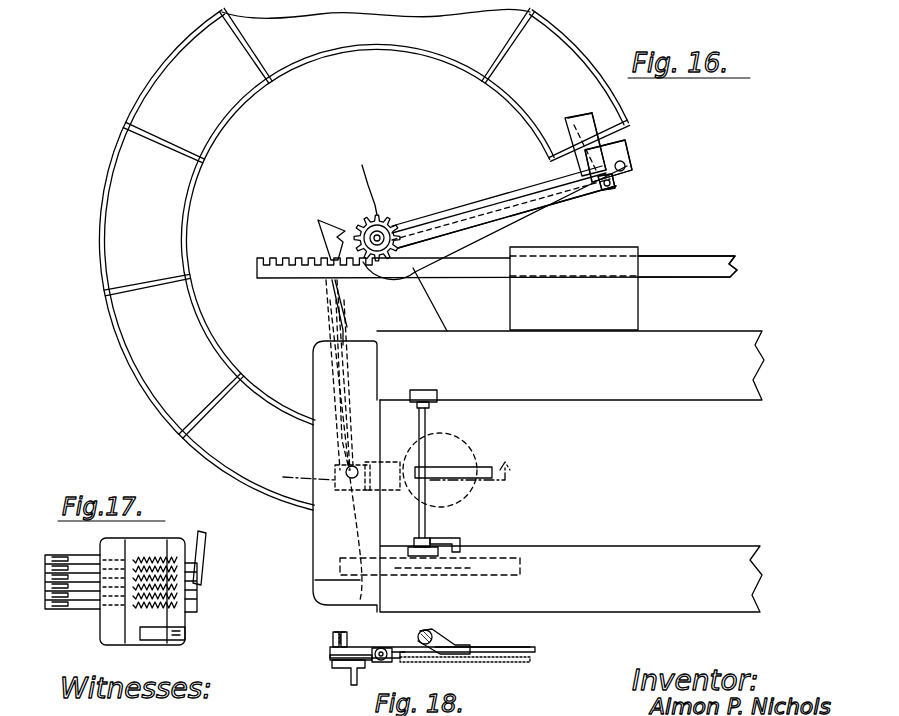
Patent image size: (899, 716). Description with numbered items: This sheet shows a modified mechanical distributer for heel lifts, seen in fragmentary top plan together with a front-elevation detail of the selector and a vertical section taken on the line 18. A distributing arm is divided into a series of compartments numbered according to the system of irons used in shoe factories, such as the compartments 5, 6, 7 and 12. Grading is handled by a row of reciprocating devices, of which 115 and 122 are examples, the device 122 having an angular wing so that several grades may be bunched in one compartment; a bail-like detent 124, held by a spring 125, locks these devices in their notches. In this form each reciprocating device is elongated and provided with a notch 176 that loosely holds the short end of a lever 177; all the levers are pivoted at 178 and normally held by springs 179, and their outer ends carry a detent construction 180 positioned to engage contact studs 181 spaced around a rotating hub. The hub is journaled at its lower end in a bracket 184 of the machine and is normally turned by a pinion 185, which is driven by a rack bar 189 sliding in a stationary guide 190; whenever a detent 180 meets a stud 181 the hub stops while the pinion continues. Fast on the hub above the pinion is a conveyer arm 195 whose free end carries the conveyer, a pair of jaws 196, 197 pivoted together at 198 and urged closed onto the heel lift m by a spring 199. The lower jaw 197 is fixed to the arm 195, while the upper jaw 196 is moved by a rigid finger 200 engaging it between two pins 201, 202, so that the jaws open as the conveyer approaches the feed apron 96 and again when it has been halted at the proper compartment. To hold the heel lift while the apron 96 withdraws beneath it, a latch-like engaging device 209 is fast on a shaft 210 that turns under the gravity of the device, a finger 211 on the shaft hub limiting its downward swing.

In FIG. 16, the compartment 12 is at (364, 259).
In FIG. 16, the wheel segment 7 is at (146, 215).
In FIG. 16, the wheel segment 6 is at (169, 365).
In FIG. 16, the compartment 5 is at (238, 425).
In FIG. 16, the rack bar 189 is at (278, 257).
In FIG. 16, the detent construction 180 is at (330, 222).
In FIG. 16, the contact studs 181 is at (402, 226).
In FIG. 16, the pinion 185 is at (375, 215).
In FIG. 16, the rigid finger 200 is at (470, 224).
In FIG. 18, the rigid finger 200 is at (336, 631).
In FIG. 16, the pivot 198 is at (585, 140).
In FIG. 18, the pivot 198 is at (387, 660).
In FIG. 16, the upper jaw 196 is at (600, 150).
In FIG. 18, the upper jaw 196 is at (330, 650).
In FIG. 16, the lower jaw 197 is at (610, 158).
In FIG. 18, the lower jaw 197 is at (383, 662).
In FIG. 16, the pin 202 is at (628, 160).
In FIG. 18, the pin 202 is at (348, 645).
In FIG. 16, the pin 201 is at (618, 186).
In FIG. 18, the pin 201 is at (333, 634).
In FIG. 16, the conveyer arm 195 is at (505, 251).
In FIG. 18, the conveyer arm 195 is at (348, 682).
In FIG. 16, the stationary guide 190 is at (600, 258).
In FIG. 16, the bracket 184 is at (425, 312).
In FIG. 16, the springs 179 is at (352, 380).
In FIG. 16, the section line 18 is at (285, 463).
In FIG. 16, the shaft 210 is at (428, 420).
In FIG. 16, the engaging device 209 is at (485, 466).
In FIG. 18, the engaging device 209 is at (472, 648).
In FIG. 16, the finger 211 is at (458, 540).
In FIG. 16, the pivot 178 is at (352, 478).
In FIG. 16, the lever 177 is at (355, 528).
In FIG. 16, the notch 176 is at (360, 575).
In FIG. 17, the notch 176 is at (62, 610).
In FIG. 17, the bail-like detent 124 is at (102, 645).
In FIG. 17, the reciprocating device 115 is at (198, 604).
In FIG. 17, the reciprocating device 122 is at (208, 555).
In FIG. 17, the spring 125 is at (152, 642).
In FIG. 18, the feed apron 96 is at (532, 660).
In FIG. 18, the spring 199 is at (335, 660).
In FIG. 18, the heel lift m is at (448, 648).